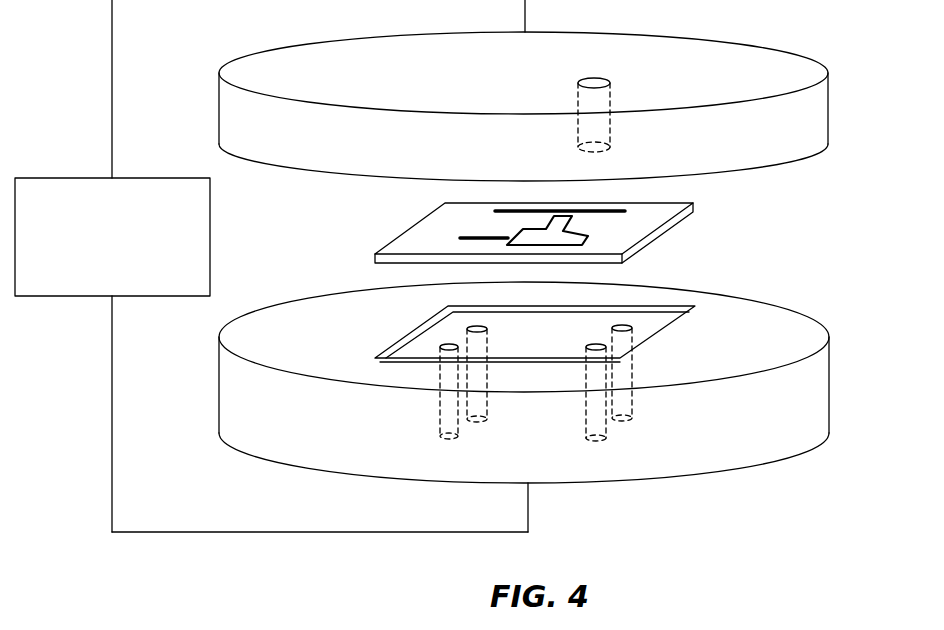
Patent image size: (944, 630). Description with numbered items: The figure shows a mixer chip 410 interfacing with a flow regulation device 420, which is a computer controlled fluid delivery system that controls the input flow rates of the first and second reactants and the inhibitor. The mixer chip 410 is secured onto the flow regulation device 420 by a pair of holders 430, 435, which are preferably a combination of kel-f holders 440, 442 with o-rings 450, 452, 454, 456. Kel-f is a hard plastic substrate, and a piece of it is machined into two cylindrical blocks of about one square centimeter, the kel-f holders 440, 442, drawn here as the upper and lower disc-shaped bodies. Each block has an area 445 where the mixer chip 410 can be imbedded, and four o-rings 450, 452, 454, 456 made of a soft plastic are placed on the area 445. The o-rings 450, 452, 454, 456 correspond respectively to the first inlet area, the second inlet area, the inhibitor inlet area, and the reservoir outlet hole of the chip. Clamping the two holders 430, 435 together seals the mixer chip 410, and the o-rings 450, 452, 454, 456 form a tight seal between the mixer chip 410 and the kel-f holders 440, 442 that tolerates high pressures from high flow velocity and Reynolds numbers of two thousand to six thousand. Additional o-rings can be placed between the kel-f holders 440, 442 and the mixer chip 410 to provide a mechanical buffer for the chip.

The mixer chip 410 is at (577, 222).
The flow regulation device 420 is at (155, 237).
The holder 430 is at (568, 387).
The holder 435 is at (568, 106).
The kel-f holder 440 is at (524, 476).
The kel-f holder 442 is at (637, 105).
The area 445 is at (563, 347).
The o-ring 450 is at (425, 356).
The o-ring 452 is at (678, 338).
The o-ring 454 is at (665, 380).
The o-ring 456 is at (393, 377).